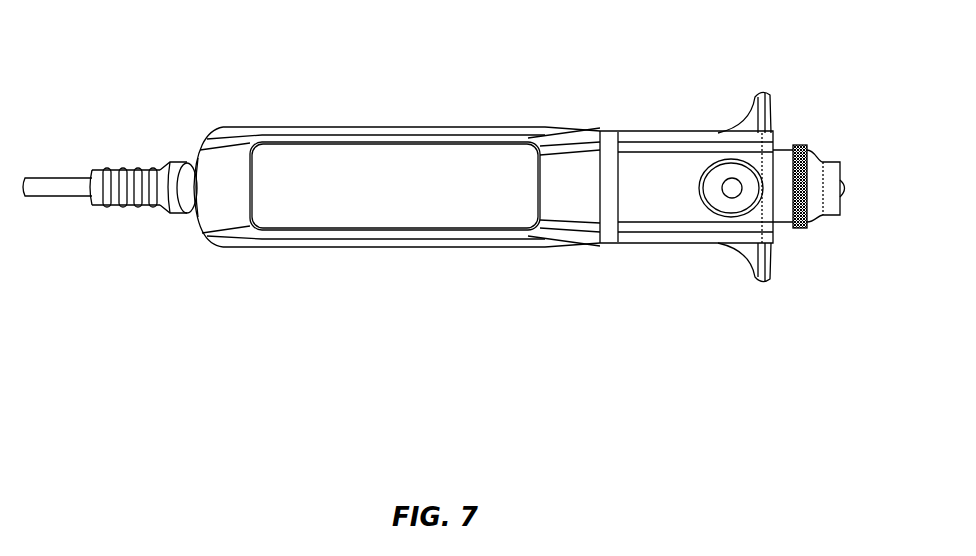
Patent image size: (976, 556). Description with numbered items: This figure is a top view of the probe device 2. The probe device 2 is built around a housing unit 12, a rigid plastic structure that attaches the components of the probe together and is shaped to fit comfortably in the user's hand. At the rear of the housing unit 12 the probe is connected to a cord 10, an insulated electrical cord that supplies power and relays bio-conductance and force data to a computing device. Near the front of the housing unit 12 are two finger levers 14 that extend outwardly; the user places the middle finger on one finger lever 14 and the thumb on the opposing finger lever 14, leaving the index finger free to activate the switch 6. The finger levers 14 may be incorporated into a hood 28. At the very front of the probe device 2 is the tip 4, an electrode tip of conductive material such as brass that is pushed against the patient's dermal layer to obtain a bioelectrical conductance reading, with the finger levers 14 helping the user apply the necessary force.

The probe device 2 is at (241, 105).
The cord 10 is at (98, 180).
The housing unit 12 is at (427, 203).
The switch 6 is at (732, 188).
The finger levers 14 is at (760, 118).
The hood 28 is at (803, 228).
The tip 4 is at (848, 188).